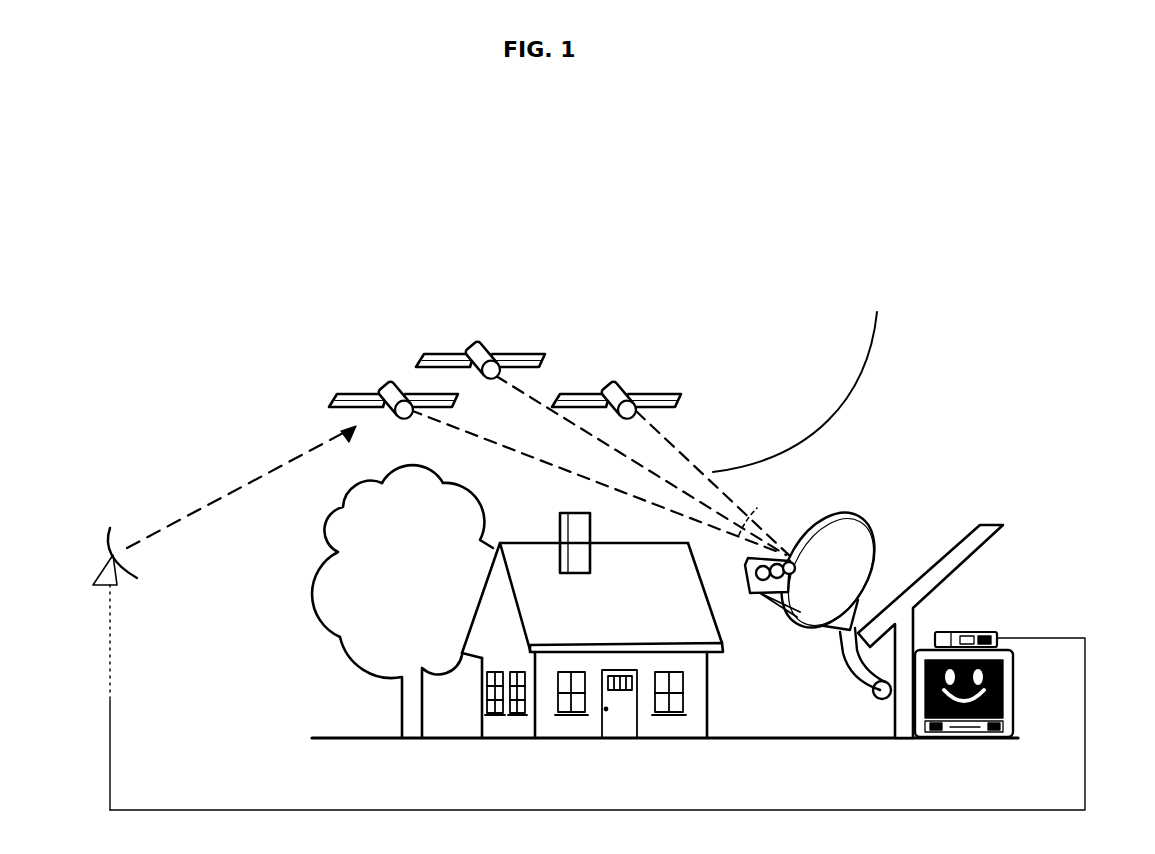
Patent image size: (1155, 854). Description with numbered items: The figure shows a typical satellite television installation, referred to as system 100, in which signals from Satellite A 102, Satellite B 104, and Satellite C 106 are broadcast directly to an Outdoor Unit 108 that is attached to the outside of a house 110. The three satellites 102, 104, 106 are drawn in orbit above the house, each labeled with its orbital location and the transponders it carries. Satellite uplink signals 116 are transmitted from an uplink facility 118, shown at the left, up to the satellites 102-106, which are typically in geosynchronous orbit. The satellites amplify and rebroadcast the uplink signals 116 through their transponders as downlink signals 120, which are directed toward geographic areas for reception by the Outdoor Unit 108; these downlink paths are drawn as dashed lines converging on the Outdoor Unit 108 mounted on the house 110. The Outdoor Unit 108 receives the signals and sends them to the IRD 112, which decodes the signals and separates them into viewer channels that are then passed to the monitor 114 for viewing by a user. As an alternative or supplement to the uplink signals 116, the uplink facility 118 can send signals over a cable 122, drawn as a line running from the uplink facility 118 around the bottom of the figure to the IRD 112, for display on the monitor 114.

The system 100 is at (667, 171).
The Satellite A 102 is at (362, 378).
The Satellite B 104 is at (628, 370).
The Satellite C 106 is at (540, 340).
The Outdoor Unit 108 is at (843, 510).
The house 110 is at (952, 542).
The IRD 112 is at (965, 630).
The monitor 114 is at (1013, 680).
The satellite uplink signals 116 is at (192, 502).
The uplink facility 118 is at (102, 560).
The downlink signals 120 is at (806, 375).
The cable 122 is at (1067, 637).